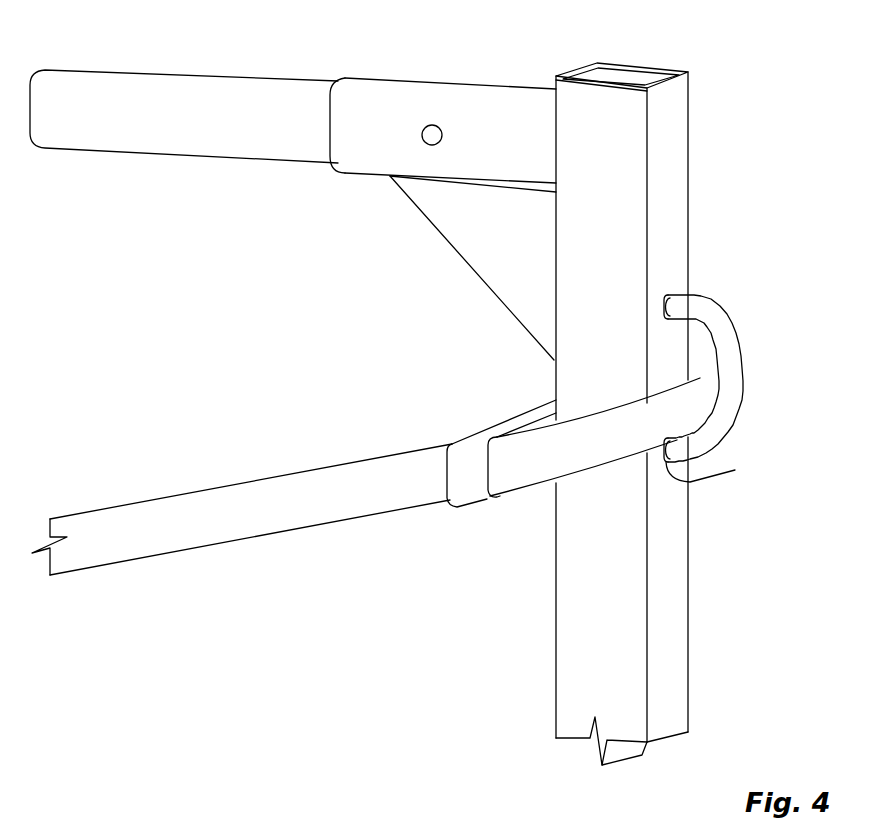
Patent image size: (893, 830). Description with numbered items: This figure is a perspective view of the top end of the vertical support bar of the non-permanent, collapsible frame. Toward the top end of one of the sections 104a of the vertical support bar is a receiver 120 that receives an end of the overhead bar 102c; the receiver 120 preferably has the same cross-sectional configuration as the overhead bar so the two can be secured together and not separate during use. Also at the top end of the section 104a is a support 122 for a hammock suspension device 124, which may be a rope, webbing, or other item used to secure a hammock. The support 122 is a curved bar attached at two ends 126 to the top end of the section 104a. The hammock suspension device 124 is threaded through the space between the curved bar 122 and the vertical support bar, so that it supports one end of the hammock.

The end of the overhead bar 102c is at (207, 77).
The receiver 120 is at (465, 83).
The section of the vertical support bar 104a is at (688, 598).
The hammock suspension device 124 is at (268, 533).
The support 122 is at (743, 368).
The ends 126 is at (690, 294).